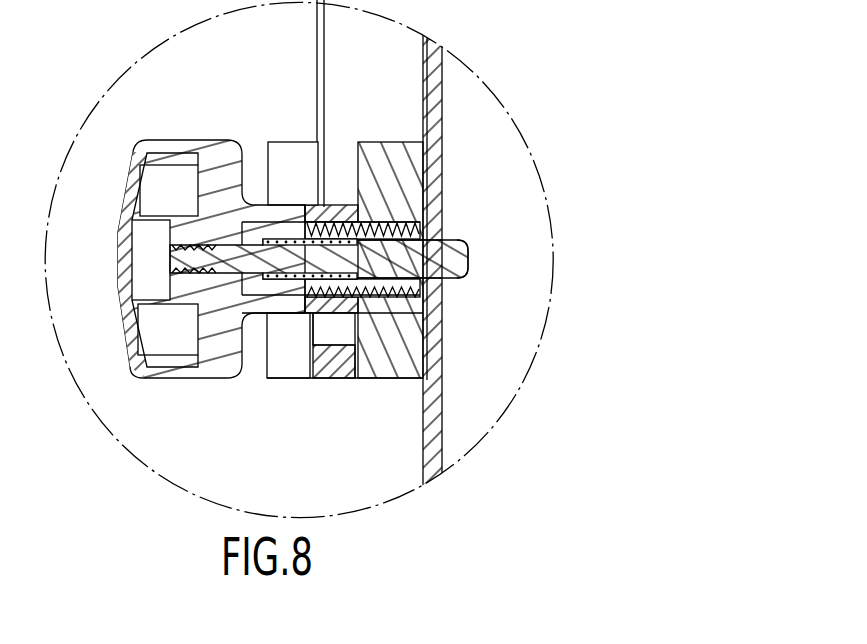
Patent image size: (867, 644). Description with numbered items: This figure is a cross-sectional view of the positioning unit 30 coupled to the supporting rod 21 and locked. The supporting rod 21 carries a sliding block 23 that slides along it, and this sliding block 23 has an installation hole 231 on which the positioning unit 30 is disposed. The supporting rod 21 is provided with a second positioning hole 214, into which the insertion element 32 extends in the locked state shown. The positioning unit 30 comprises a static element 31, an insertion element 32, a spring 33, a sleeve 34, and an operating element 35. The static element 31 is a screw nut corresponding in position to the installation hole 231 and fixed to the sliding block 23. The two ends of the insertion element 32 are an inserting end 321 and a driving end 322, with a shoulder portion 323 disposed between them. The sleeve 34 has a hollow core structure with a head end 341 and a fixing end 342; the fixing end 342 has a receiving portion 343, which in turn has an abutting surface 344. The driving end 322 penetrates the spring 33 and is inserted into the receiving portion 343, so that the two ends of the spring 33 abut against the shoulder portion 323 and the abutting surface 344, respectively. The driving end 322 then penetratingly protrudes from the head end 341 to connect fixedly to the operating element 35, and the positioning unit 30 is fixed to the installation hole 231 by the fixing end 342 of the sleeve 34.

The supporting rod 21 is at (437, 70).
The sliding block 23 is at (430, 163).
The installation hole 231 is at (430, 200).
The second positioning hole 214 is at (445, 234).
The positioning unit 30 is at (311, 251).
The static element 31 is at (362, 378).
The insertion element 32 is at (355, 277).
The inserting end 321 is at (469, 257).
The driving end 322 is at (300, 281).
The shoulder portion 323 is at (337, 237).
The spring 33 is at (330, 282).
The sleeve 34 is at (327, 242).
The head end 341 is at (287, 236).
The fixing end 342 is at (378, 300).
The receiving portion 343 is at (267, 237).
The abutting surface 344 is at (267, 305).
The operating element 35 is at (206, 372).